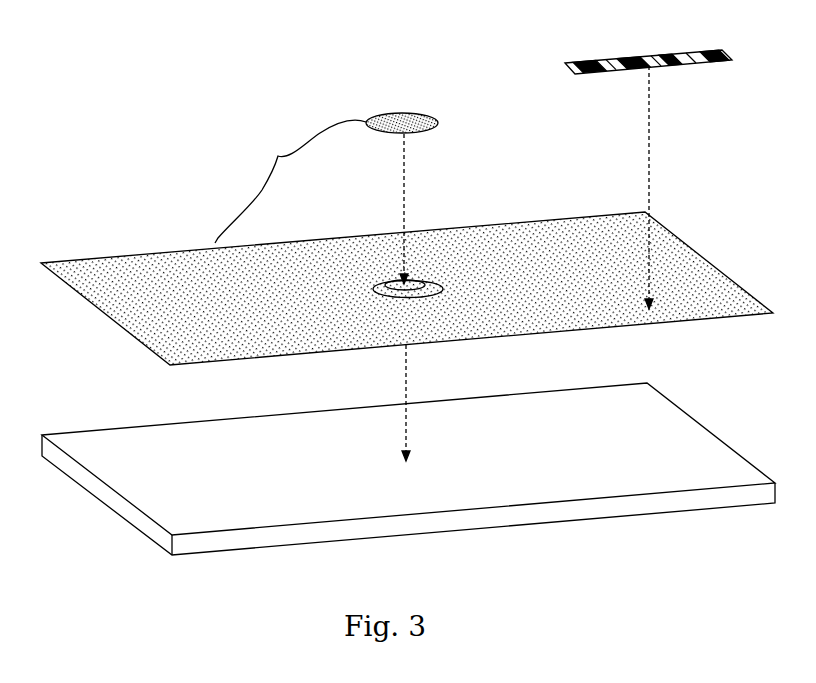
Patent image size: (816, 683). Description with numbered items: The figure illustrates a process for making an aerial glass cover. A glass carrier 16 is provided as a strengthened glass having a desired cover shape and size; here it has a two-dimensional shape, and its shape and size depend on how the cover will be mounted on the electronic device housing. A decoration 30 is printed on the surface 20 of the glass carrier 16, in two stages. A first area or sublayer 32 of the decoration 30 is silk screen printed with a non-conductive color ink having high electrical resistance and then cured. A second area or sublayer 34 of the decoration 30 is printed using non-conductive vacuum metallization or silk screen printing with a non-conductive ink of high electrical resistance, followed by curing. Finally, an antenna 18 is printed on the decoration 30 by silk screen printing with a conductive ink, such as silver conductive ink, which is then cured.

The glass carrier 16 is at (613, 508).
The antenna 18 is at (645, 62).
The surface 20 is at (702, 435).
The decoration 30 is at (290, 181).
The first area or sublayer 32 is at (313, 253).
The second area or sublayer 34 is at (403, 120).